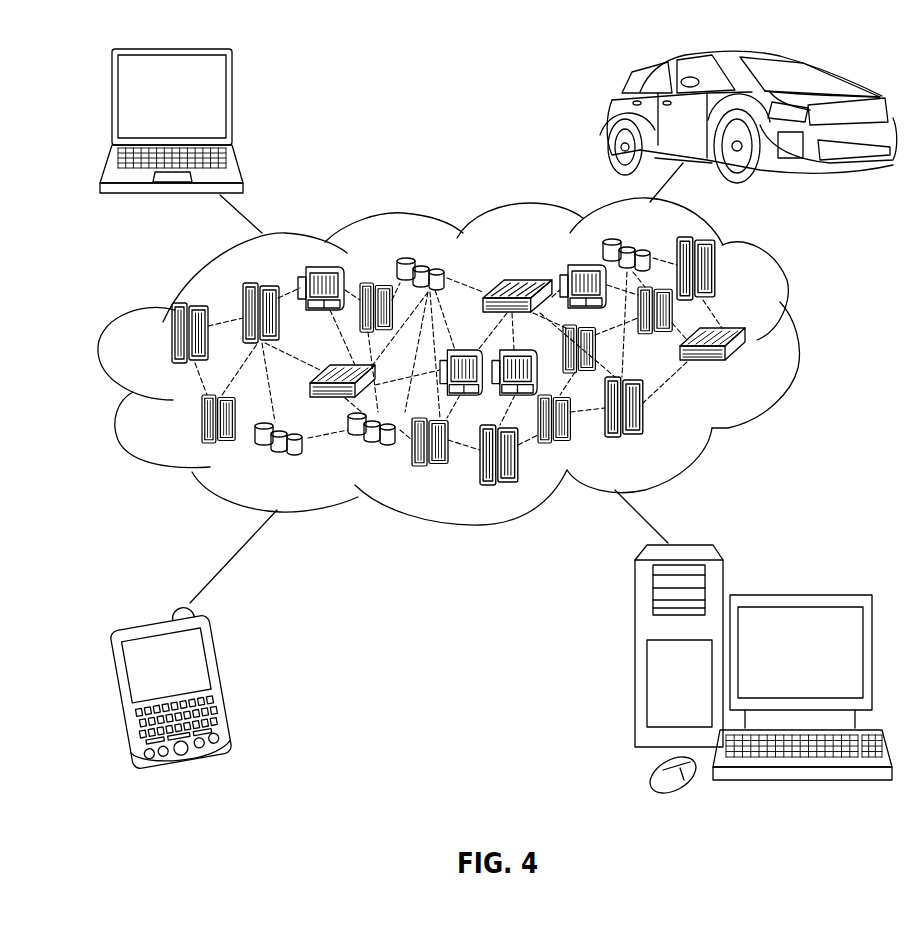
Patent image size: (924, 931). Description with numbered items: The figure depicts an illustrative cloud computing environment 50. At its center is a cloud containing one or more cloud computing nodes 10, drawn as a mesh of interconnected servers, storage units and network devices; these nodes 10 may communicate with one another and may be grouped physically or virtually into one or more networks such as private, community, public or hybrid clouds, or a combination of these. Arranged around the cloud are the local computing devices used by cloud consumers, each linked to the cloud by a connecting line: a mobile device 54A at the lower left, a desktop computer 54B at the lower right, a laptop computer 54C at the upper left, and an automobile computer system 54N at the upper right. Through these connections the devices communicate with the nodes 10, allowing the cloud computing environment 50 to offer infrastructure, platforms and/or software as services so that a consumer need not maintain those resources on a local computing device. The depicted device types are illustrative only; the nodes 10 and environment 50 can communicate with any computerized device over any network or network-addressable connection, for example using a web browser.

The cloud computing nodes 10 is at (752, 370).
The cloud computing environment 50 is at (799, 343).
The mobile device 54A is at (222, 680).
The desktop computer 54B is at (798, 593).
The laptop computer 54C is at (232, 103).
The automobile computer system 54N is at (612, 117).